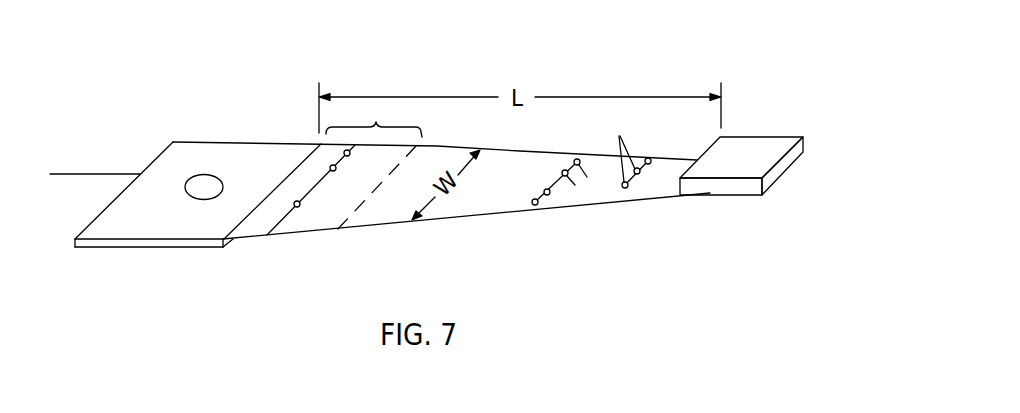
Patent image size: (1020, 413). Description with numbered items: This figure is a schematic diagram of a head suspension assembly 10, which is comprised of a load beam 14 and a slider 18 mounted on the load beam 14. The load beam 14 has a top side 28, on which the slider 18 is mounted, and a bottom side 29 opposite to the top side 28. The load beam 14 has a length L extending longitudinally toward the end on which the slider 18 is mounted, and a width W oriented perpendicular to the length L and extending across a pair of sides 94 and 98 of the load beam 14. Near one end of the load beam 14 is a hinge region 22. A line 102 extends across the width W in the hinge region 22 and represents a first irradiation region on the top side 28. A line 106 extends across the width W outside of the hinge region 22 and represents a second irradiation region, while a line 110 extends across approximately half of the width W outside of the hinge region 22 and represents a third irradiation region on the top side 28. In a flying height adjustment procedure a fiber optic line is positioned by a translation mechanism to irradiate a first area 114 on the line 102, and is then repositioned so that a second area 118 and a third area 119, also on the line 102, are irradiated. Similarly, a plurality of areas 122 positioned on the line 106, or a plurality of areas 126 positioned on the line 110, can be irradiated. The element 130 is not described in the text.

The head suspension assembly 10 is at (513, 224).
The load beam 14 is at (398, 222).
The slider 18 is at (804, 142).
The hinge region 22 is at (378, 123).
The top side 28 is at (388, 215).
The bottom side 29 is at (250, 241).
The side 94 is at (457, 217).
The side 98 is at (545, 150).
The line 102 is at (284, 229).
The line 106 is at (562, 176).
The line 110 is at (649, 158).
The first area 114 is at (294, 205).
The second area 118 is at (330, 168).
The third area 119 is at (344, 151).
The plurality of areas 122 is at (539, 202).
The plurality of areas 126 is at (620, 145).
The reference line 130 is at (80, 173).